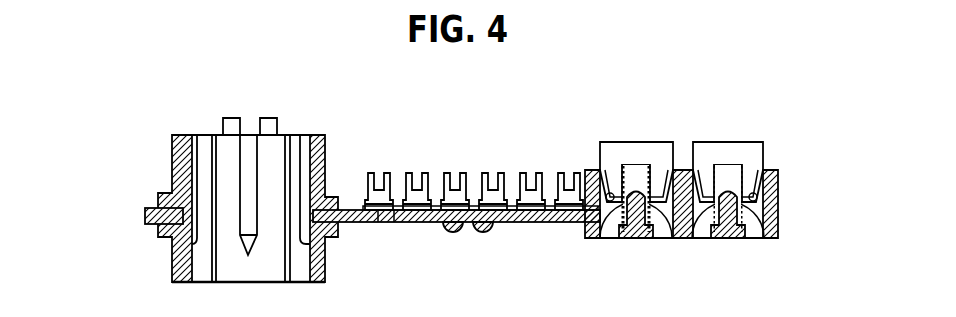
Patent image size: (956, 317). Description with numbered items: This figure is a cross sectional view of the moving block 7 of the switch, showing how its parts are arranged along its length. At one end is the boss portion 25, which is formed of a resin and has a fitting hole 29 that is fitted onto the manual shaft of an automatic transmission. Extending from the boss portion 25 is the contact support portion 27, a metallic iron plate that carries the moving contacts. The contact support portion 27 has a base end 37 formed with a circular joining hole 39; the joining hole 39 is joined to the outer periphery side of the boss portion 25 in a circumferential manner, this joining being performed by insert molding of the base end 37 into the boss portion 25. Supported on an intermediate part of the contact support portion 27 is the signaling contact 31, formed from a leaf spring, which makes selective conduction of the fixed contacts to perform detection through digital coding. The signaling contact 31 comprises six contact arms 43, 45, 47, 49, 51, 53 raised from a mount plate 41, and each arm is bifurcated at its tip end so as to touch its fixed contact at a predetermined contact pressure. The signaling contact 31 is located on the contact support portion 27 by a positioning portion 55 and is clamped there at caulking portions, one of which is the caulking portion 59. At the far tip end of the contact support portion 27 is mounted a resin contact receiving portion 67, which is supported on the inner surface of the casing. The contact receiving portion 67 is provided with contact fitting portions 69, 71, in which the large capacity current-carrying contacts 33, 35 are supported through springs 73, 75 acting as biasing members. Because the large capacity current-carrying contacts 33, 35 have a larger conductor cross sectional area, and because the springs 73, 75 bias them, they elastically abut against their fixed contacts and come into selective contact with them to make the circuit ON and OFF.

The moving block 7 is at (509, 70).
The boss portion 25 is at (183, 133).
The contact support portion 27 is at (521, 233).
The fitting hole 29 is at (273, 150).
The signaling contact 31 is at (465, 159).
The large capacity current-carrying contact 33 is at (642, 150).
The large capacity current-carrying contact 35 is at (728, 155).
The base end 37 is at (145, 212).
The joining hole 39 is at (177, 193).
The mount plate 41 is at (363, 208).
The contact arm 43 is at (371, 173).
The contact arm 45 is at (410, 173).
The contact arm 47 is at (447, 175).
The contact arm 49 is at (485, 175).
The contact arm 51 is at (527, 175).
The contact arm 53 is at (560, 175).
The positioning portion 55 is at (463, 228).
The caulking portion 59 is at (385, 222).
The contact receiving portion 67 is at (778, 191).
The contact fitting portion 69 is at (602, 218).
The contact fitting portion 71 is at (758, 236).
The spring 73 is at (647, 212).
The spring 75 is at (745, 216).